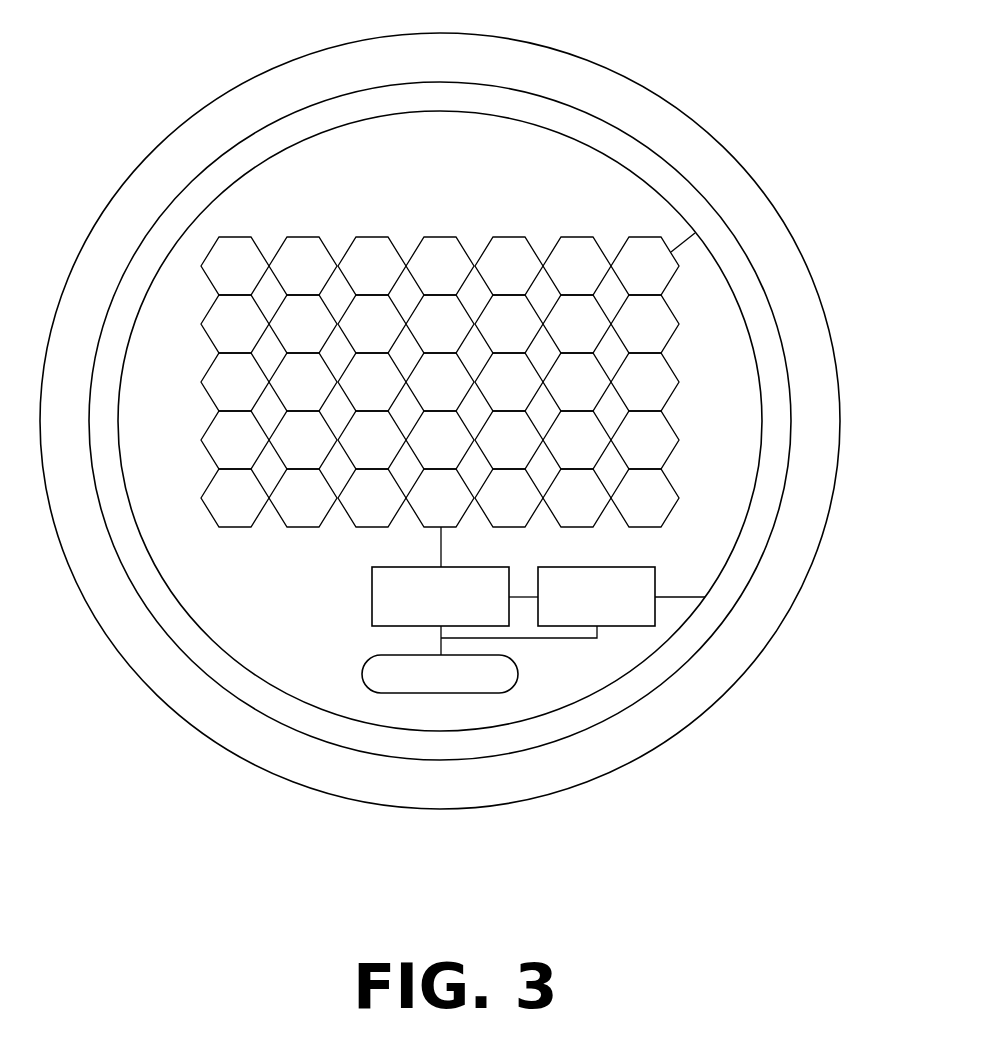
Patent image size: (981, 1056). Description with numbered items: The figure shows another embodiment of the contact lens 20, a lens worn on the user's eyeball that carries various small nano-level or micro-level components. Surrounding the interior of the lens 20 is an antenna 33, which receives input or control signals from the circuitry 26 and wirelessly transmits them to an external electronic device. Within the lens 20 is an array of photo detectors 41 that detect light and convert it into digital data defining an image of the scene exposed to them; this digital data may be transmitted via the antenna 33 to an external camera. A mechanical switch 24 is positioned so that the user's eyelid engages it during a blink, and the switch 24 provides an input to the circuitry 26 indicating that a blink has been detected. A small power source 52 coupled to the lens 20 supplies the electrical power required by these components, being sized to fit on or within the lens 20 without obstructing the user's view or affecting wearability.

The contact lens 20 is at (479, 377).
The antenna 33 is at (440, 421).
The photo detectors 41 is at (220, 278).
The power source 52 is at (458, 591).
The circuitry 26 is at (622, 577).
The mechanical switch 24 is at (440, 692).